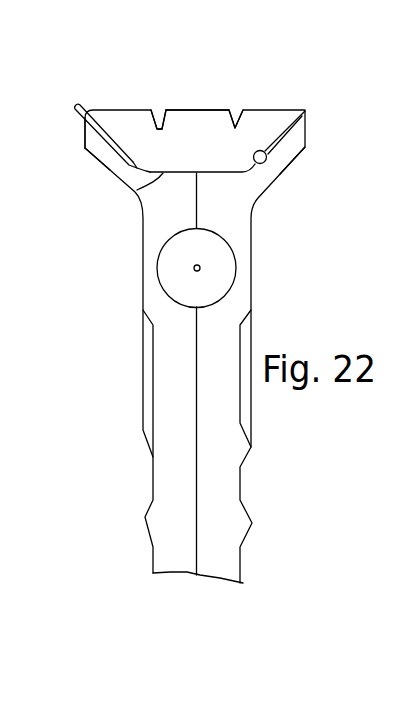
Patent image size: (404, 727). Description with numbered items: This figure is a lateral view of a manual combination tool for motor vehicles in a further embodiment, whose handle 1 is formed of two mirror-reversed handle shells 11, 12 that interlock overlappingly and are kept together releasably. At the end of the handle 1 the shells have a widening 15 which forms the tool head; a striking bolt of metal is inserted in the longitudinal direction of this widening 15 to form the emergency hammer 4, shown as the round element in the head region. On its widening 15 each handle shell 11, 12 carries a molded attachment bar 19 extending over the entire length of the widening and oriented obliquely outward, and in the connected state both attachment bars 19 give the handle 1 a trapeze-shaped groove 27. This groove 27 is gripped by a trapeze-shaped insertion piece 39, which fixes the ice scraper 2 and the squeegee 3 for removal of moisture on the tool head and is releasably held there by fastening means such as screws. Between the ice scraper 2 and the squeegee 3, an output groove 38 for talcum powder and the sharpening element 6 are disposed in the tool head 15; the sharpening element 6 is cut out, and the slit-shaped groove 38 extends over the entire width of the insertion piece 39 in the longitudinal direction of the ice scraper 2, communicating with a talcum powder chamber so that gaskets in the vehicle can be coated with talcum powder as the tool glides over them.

The handle 1 is at (136, 379).
The ice scraper 2 is at (78, 106).
The squeegee 3 is at (305, 110).
The emergency hammer 4 is at (215, 275).
The sharpening element 6 is at (239, 107).
The handle shell 11 is at (178, 514).
The handle shell 12 is at (217, 548).
The widening 15 is at (237, 192).
The attachment bar 19 is at (107, 152).
The trapeze-shaped groove 27 is at (137, 190).
The output groove 38 is at (157, 104).
The insertion piece 39 is at (198, 133).